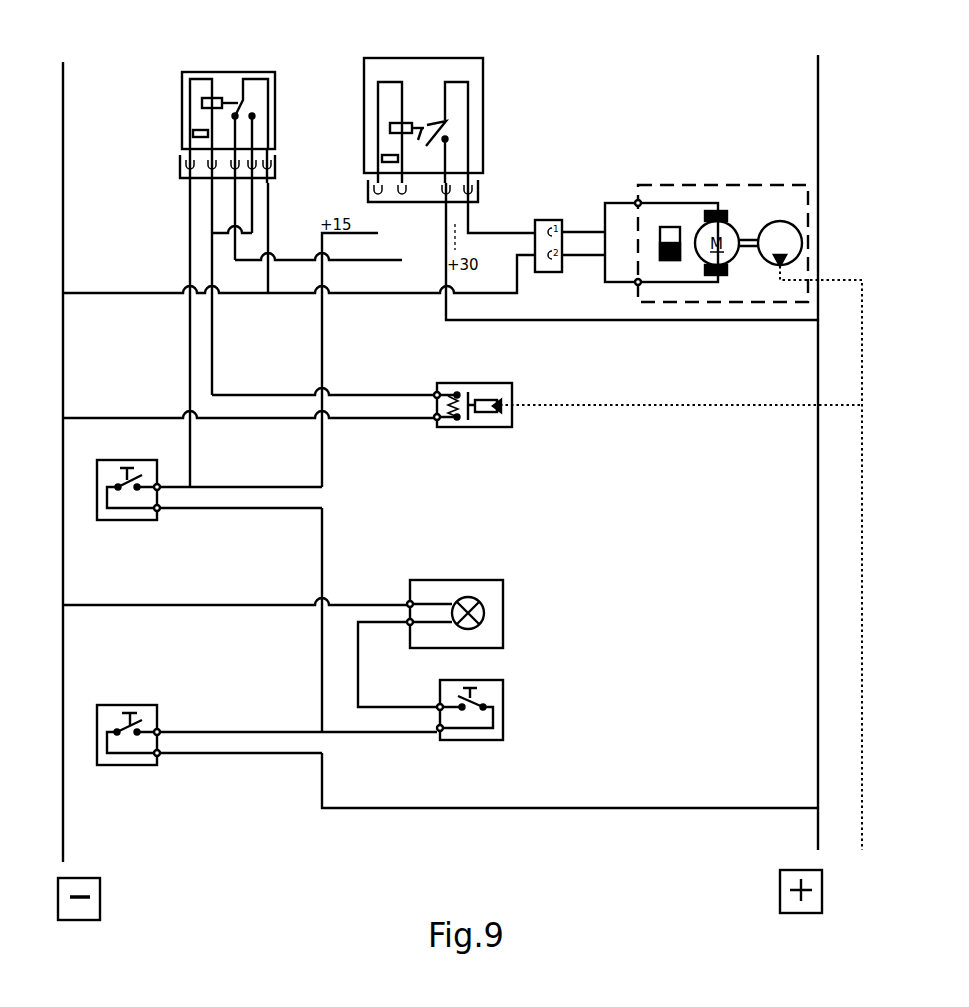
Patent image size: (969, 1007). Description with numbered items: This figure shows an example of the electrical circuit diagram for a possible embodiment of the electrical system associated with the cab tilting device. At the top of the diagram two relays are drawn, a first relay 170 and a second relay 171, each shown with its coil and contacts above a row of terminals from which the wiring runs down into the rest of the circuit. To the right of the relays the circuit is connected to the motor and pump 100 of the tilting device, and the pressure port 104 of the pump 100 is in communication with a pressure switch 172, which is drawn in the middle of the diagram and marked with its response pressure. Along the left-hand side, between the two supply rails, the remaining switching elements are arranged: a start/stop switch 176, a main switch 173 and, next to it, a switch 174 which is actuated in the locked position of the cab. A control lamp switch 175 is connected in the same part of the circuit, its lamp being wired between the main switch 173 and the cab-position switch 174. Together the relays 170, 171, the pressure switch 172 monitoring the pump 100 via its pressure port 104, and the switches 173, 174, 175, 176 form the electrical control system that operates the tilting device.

The pump 100 is at (785, 232).
The pressure port 104 is at (777, 267).
The first relay 170 is at (220, 62).
The second relay 171 is at (418, 50).
The pressure switch 172 is at (490, 420).
The main switch 173 is at (135, 705).
The switch 174 is at (505, 705).
The control lamp switch 175 is at (493, 612).
The start/stop switch 176 is at (122, 512).